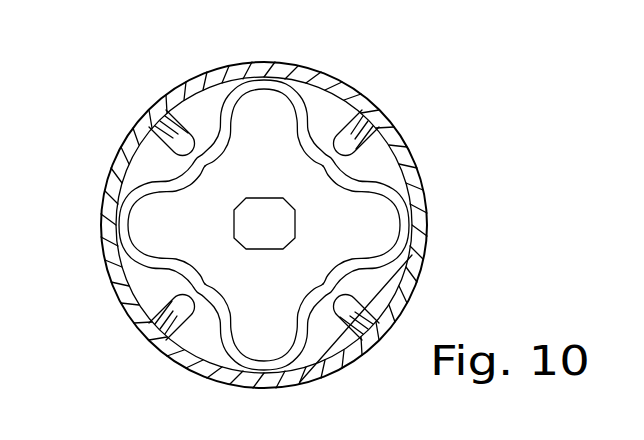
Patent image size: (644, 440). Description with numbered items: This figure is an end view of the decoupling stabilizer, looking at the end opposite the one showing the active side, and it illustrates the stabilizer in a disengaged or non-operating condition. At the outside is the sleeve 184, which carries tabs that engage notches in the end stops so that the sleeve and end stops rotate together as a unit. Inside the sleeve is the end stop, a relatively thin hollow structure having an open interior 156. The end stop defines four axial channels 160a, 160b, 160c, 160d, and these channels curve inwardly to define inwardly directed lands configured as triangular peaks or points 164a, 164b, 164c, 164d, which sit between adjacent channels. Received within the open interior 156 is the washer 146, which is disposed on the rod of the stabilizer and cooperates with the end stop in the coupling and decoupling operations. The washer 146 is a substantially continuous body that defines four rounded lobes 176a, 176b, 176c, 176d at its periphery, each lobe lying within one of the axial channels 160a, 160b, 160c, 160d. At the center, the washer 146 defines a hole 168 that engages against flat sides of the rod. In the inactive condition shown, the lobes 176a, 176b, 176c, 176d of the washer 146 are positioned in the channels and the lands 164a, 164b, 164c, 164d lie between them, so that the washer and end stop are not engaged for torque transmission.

The sleeve 184 is at (180, 93).
The axial channel 160a is at (412, 190).
The axial channel 160b is at (300, 378).
The axial channel 160c is at (116, 248).
The axial channel 160d is at (229, 74).
The open interior 156 is at (358, 172).
The washer 146 is at (269, 225).
The lobe 176a is at (267, 97).
The lobe 176b is at (383, 229).
The lobe 176c is at (263, 340).
The lobe 176d is at (135, 220).
The land 164a is at (352, 307).
The land 164b is at (181, 300).
The land 164c is at (185, 147).
The land 164d is at (338, 147).
The hole 168 is at (250, 198).